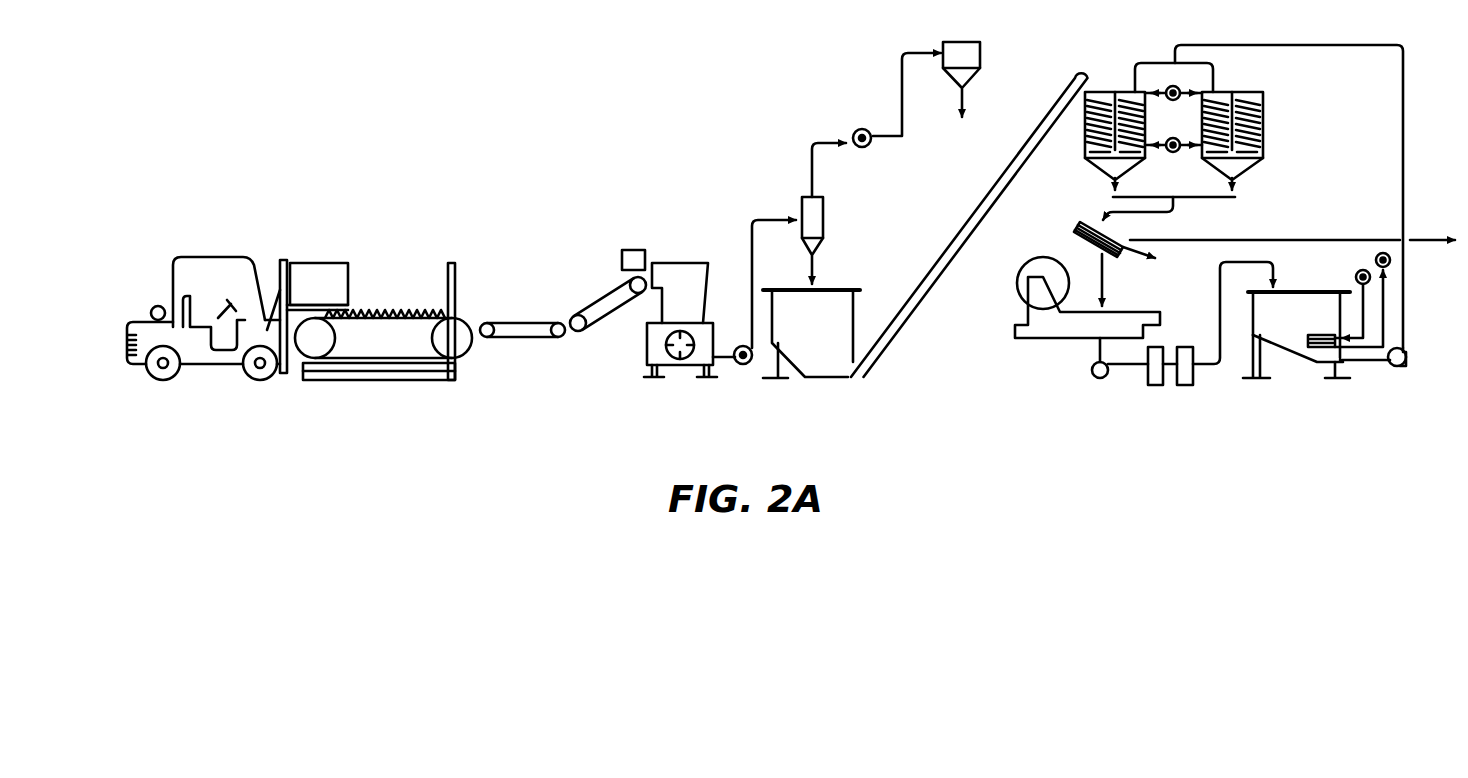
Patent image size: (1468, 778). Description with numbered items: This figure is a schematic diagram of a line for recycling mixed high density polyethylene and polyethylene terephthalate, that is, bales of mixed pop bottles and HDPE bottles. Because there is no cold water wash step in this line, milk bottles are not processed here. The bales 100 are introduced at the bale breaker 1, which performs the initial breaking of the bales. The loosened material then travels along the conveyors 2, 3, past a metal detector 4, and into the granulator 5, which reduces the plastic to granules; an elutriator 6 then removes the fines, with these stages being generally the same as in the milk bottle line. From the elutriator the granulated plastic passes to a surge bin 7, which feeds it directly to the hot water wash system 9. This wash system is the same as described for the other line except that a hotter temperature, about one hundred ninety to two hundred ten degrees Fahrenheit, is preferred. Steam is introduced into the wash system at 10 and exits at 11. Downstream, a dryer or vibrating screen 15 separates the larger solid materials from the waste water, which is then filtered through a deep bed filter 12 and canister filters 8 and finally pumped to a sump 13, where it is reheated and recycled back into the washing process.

The bales 100 is at (348, 266).
The bale breaker 1 is at (405, 302).
The conveyor 2 is at (521, 316).
The conveyor 3 is at (603, 288).
The metal detector 4 is at (633, 248).
The granulator 5 is at (685, 257).
The elutriator 6 is at (795, 193).
The surge bin 7 is at (846, 283).
The canister filters 8 is at (1140, 389).
The hot water wash system 9 is at (1107, 85).
The steam inlet 10 is at (1178, 104).
The steam outlet 11 is at (1177, 157).
The deep bed filter 12 is at (1023, 312).
The sump 13 is at (1296, 361).
The vibrating screen 15 is at (1081, 221).